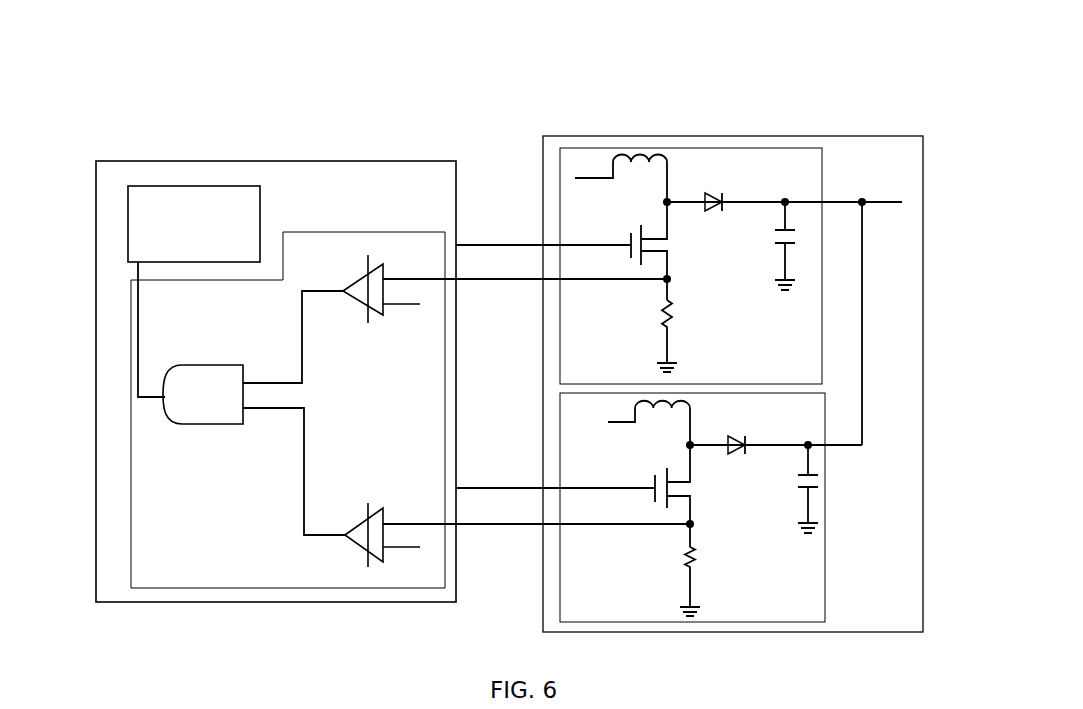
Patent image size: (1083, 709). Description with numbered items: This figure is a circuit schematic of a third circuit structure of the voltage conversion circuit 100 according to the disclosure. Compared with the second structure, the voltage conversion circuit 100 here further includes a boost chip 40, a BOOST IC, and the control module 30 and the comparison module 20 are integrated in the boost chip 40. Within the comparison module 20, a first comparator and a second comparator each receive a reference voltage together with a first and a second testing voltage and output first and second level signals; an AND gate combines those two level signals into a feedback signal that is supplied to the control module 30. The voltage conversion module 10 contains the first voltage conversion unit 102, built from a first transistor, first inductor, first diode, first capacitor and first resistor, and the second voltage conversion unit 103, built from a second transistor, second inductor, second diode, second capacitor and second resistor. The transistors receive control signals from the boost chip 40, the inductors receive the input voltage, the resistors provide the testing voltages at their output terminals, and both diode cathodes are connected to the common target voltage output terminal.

The voltage conversion circuit 100 is at (166, 78).
The voltage conversion module 10 is at (653, 136).
The comparison module 20 is at (412, 232).
The control module 30 is at (197, 186).
The boost chip 40 is at (337, 161).
The first voltage conversion unit 102 is at (823, 336).
The second voltage conversion unit 103 is at (825, 515).